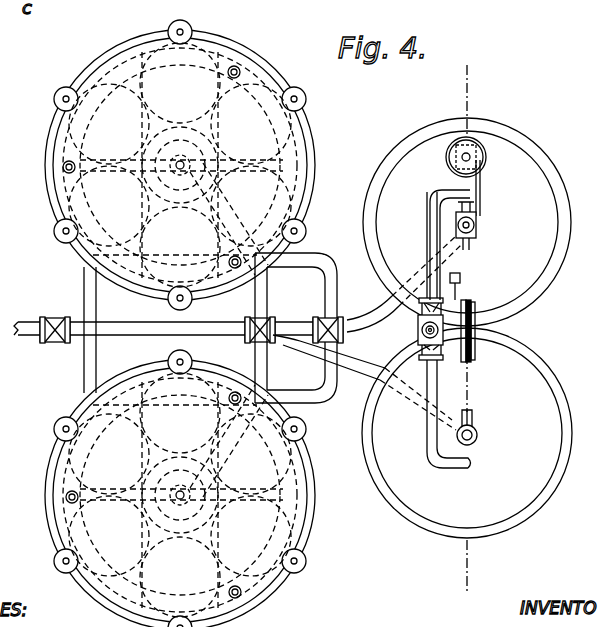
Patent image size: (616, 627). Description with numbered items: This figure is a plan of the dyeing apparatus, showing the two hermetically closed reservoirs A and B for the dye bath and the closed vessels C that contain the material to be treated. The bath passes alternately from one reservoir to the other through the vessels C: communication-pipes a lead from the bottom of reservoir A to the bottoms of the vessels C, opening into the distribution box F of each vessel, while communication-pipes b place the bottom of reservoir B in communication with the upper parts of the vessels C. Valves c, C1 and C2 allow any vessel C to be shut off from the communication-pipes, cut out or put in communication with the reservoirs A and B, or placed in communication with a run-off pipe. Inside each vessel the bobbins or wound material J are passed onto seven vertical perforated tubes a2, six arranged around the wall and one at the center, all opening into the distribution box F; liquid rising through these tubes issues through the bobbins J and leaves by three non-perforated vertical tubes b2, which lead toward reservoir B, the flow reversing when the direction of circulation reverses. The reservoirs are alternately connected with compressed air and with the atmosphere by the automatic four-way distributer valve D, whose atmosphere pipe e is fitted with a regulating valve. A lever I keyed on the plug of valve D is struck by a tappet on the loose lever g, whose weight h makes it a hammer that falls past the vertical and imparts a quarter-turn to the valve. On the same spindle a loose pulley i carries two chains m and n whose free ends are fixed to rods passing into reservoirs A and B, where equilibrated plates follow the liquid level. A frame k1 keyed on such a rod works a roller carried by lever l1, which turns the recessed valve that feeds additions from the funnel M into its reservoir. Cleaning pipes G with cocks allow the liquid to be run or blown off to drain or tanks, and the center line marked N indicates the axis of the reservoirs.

The closed vessel C is at (60, 165).
The valve C1 is at (246, 321).
The valve C2 is at (54, 318).
The valve c is at (332, 318).
The communication-pipe b is at (312, 256).
The non-perforated vertical tube b2 is at (238, 586).
The communication-pipe a is at (278, 322).
The vertical perforated tube a2 is at (180, 330).
The distribution box F is at (217, 173).
The bobbins J is at (180, 330).
The cleaning pipe G is at (84, 345).
The funnel M is at (446, 160).
The lever l1 is at (482, 195).
The frame k1 is at (438, 215).
The weight h is at (444, 268).
The reservoir B is at (490, 246).
The chain m is at (462, 268).
The lever g is at (473, 302).
The pulley i is at (480, 312).
The automatic distributer valve D is at (418, 322).
The pipe e is at (422, 336).
The lever I is at (452, 414).
The chain n is at (470, 385).
The reservoir A is at (467, 433).
The axis line N is at (467, 337).